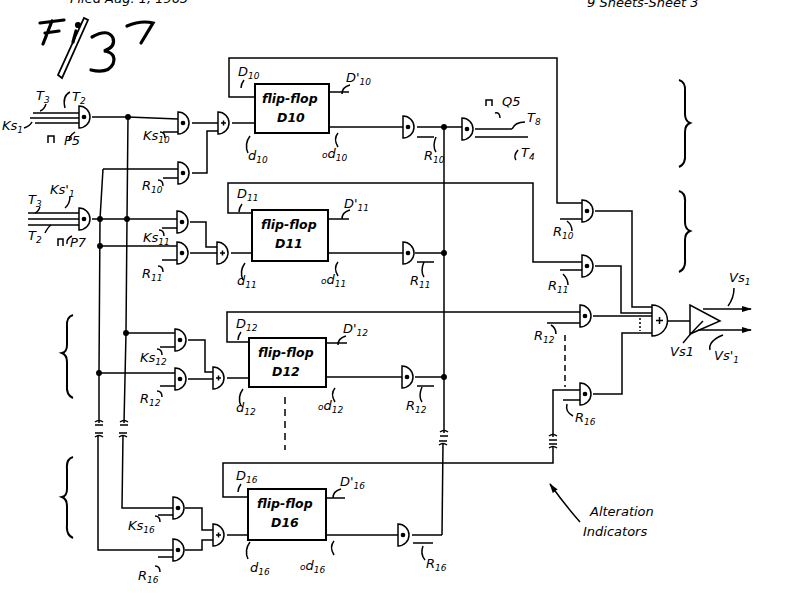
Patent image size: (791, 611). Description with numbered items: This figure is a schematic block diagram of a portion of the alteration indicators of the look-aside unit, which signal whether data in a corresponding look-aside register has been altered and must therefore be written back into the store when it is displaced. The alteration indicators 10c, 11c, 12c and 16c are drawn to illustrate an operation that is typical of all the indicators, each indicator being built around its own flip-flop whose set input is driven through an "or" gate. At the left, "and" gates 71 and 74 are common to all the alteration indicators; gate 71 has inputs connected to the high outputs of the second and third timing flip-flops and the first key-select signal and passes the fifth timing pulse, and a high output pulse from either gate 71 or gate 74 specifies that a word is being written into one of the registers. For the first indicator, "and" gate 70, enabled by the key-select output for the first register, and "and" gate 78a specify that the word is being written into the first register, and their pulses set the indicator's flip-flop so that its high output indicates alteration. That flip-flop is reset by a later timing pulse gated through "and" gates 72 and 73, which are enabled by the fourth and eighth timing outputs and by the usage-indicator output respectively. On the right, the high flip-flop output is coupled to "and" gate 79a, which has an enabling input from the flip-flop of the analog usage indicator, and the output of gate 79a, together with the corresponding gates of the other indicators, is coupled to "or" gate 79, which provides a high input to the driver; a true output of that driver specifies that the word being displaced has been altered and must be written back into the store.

The "and" gate 70 is at (192, 112).
The "and" gate 71 is at (93, 109).
The "and" gate 72 is at (465, 116).
The "and" gate 73 is at (407, 116).
The "and" gate 74 is at (88, 209).
The "and" gate 78a is at (198, 163).
The "or" gate 79 is at (664, 304).
The "and" gate 79a is at (592, 204).
The alteration indicator 10c is at (708, 123).
The alteration indicator 11c is at (708, 231).
The alteration indicator 12c is at (40, 356).
The alteration indicator 16c is at (39, 497).